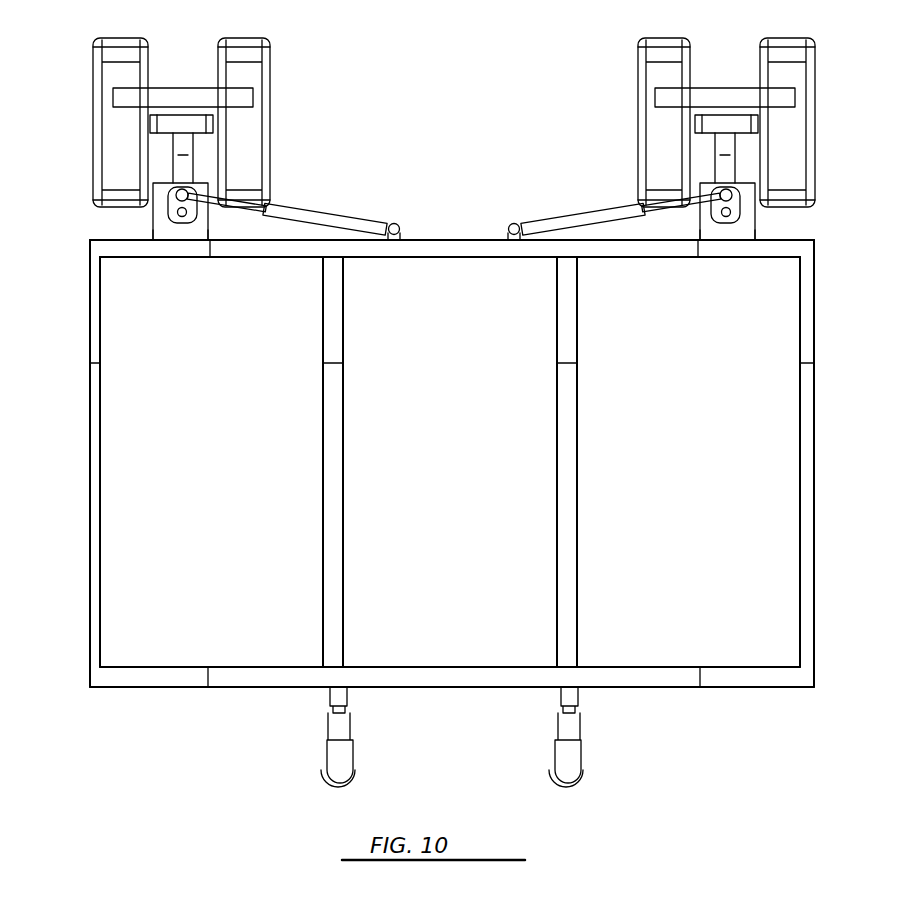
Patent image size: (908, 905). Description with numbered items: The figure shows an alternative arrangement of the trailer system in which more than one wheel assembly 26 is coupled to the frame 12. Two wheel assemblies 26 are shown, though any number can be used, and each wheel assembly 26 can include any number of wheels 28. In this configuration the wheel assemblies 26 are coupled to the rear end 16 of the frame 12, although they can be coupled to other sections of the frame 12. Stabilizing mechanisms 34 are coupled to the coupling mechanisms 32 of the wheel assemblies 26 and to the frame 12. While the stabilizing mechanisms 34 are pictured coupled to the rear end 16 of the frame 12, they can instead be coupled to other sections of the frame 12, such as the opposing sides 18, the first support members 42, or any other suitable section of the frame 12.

The frame 12 is at (819, 445).
The rear end 16 is at (453, 246).
The opposing sides 18 is at (90, 462).
The wheel assembly 26 is at (185, 78).
The wheels 28 is at (270, 93).
The coupling mechanism 32 is at (157, 224).
The stabilizing mechanism 34 is at (318, 207).
The first support members 42 is at (323, 465).